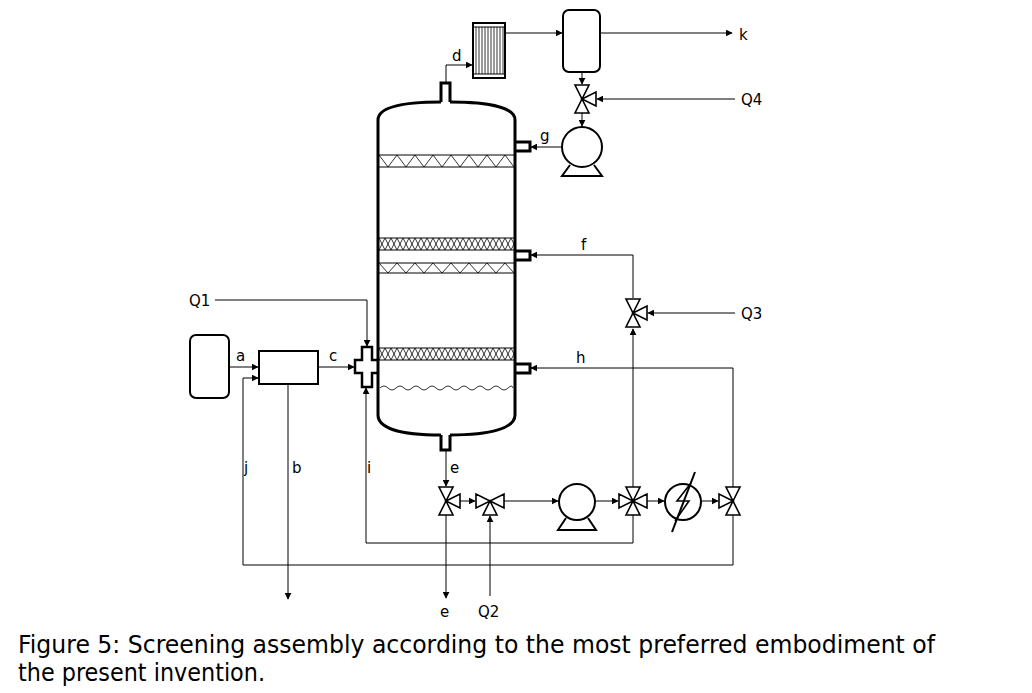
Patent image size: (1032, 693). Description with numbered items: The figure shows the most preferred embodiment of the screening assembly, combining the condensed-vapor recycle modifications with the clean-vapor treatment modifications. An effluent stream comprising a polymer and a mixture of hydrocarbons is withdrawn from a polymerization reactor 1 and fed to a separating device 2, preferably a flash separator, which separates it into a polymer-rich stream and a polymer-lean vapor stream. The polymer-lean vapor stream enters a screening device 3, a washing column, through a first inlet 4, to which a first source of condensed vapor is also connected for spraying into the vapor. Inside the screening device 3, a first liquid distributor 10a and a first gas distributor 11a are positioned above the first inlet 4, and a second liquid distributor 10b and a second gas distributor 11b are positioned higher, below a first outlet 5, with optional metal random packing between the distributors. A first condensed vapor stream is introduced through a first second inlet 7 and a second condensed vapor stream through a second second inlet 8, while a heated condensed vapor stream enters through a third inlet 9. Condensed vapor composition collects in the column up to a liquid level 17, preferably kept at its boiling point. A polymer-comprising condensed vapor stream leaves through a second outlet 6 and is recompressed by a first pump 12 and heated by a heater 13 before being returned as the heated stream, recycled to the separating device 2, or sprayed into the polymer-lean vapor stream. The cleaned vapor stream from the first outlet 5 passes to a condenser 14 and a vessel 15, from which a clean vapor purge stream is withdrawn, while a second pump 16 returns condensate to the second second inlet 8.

The polymerization reactor 1 is at (209, 366).
The separating device 2 is at (288, 367).
The screening device 3 is at (439, 266).
The first inlet 4 is at (362, 364).
The first outlet 5 is at (438, 92).
The second outlet 6 is at (438, 443).
The first second inlet 7 is at (522, 247).
The second second inlet 8 is at (522, 136).
The third inlet 9 is at (522, 358).
The first liquid distributor 10a is at (516, 276).
The second liquid distributor 10b is at (516, 170).
The first gas distributor 11a is at (516, 347).
The second gas distributor 11b is at (516, 238).
The first pump 12 is at (577, 507).
The heater 13 is at (683, 513).
The condenser 14 is at (489, 40).
The vessel 15 is at (581, 41).
The second pump 16 is at (582, 151).
The liquid level of condensed vapor composition 17 is at (508, 392).